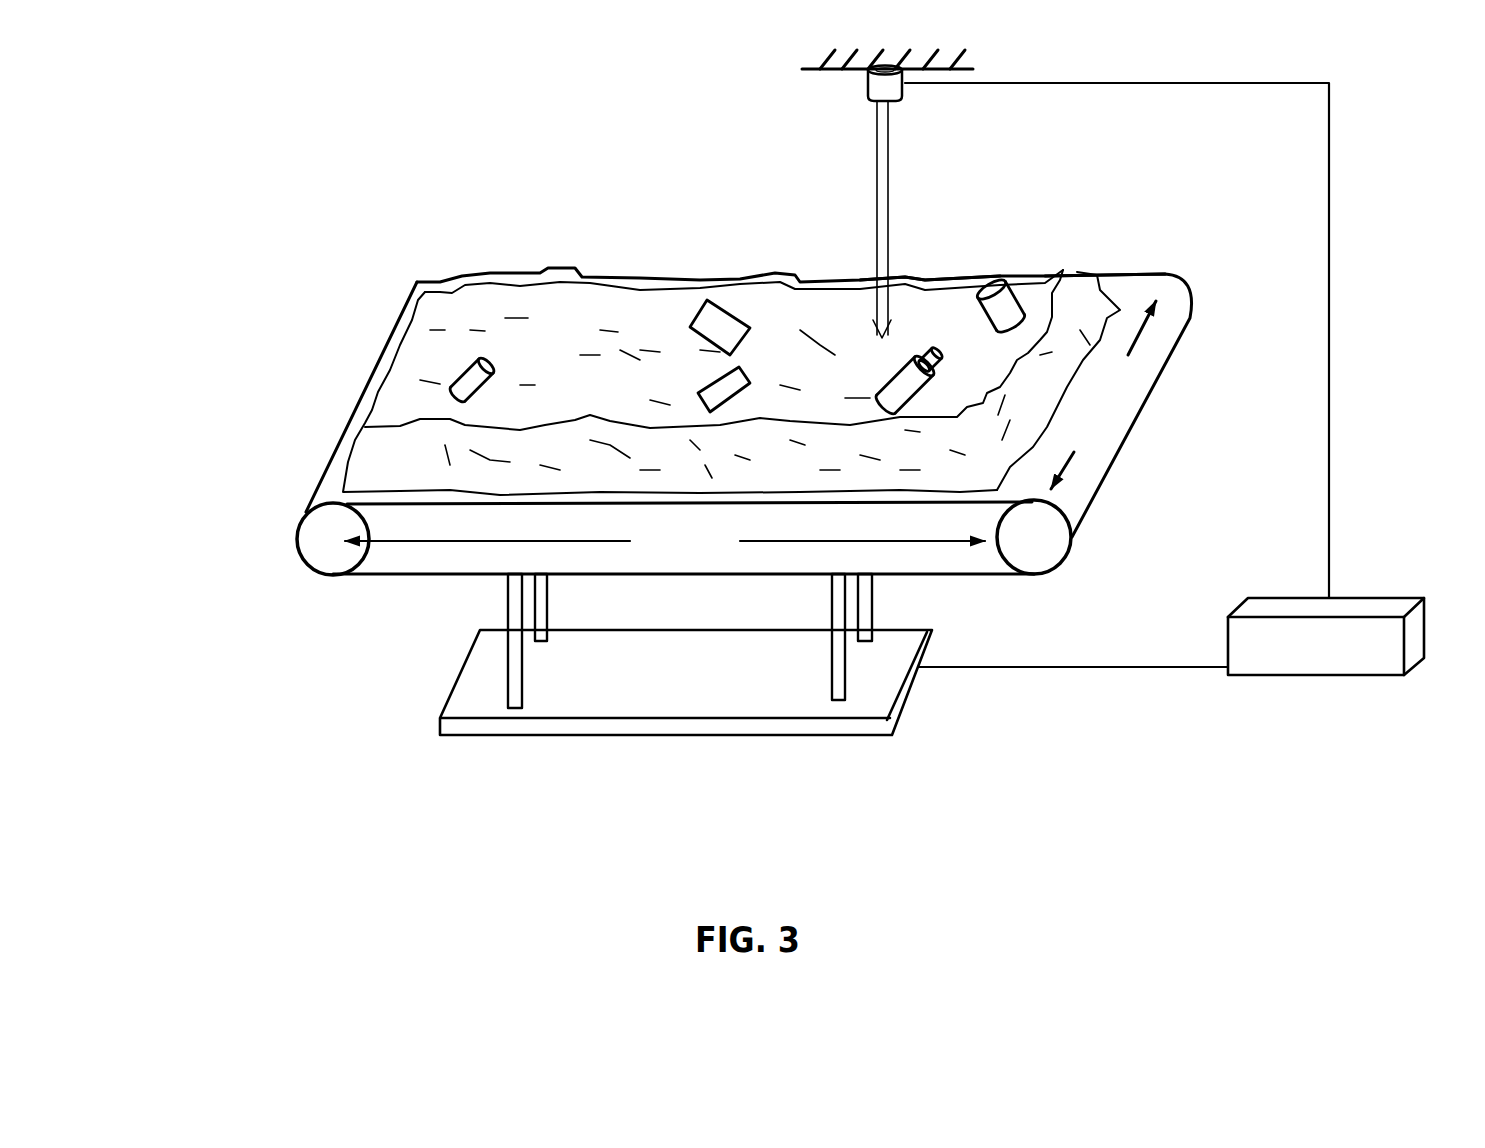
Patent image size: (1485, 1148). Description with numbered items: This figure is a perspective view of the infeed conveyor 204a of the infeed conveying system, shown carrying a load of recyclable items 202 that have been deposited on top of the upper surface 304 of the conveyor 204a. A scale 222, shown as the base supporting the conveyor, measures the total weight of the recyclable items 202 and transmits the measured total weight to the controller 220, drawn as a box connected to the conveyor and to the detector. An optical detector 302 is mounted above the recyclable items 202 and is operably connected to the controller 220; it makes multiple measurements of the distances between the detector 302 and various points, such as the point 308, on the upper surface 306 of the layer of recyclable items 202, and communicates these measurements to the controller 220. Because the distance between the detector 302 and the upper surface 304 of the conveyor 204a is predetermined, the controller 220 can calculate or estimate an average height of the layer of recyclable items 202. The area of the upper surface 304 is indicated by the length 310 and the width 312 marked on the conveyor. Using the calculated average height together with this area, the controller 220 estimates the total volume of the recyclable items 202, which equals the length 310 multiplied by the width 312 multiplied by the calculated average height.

The recyclable items 202 is at (564, 308).
The infeed conveyor 204a is at (256, 536).
The controller 220 is at (1370, 599).
The scale 222 is at (938, 631).
The optical detector 302 is at (897, 97).
The upper surface of conveyor 304 is at (1120, 268).
The upper surface of the layer of recyclable items 306 is at (915, 272).
The point 308 is at (878, 337).
The length 310 is at (685, 558).
The width 312 is at (1120, 392).